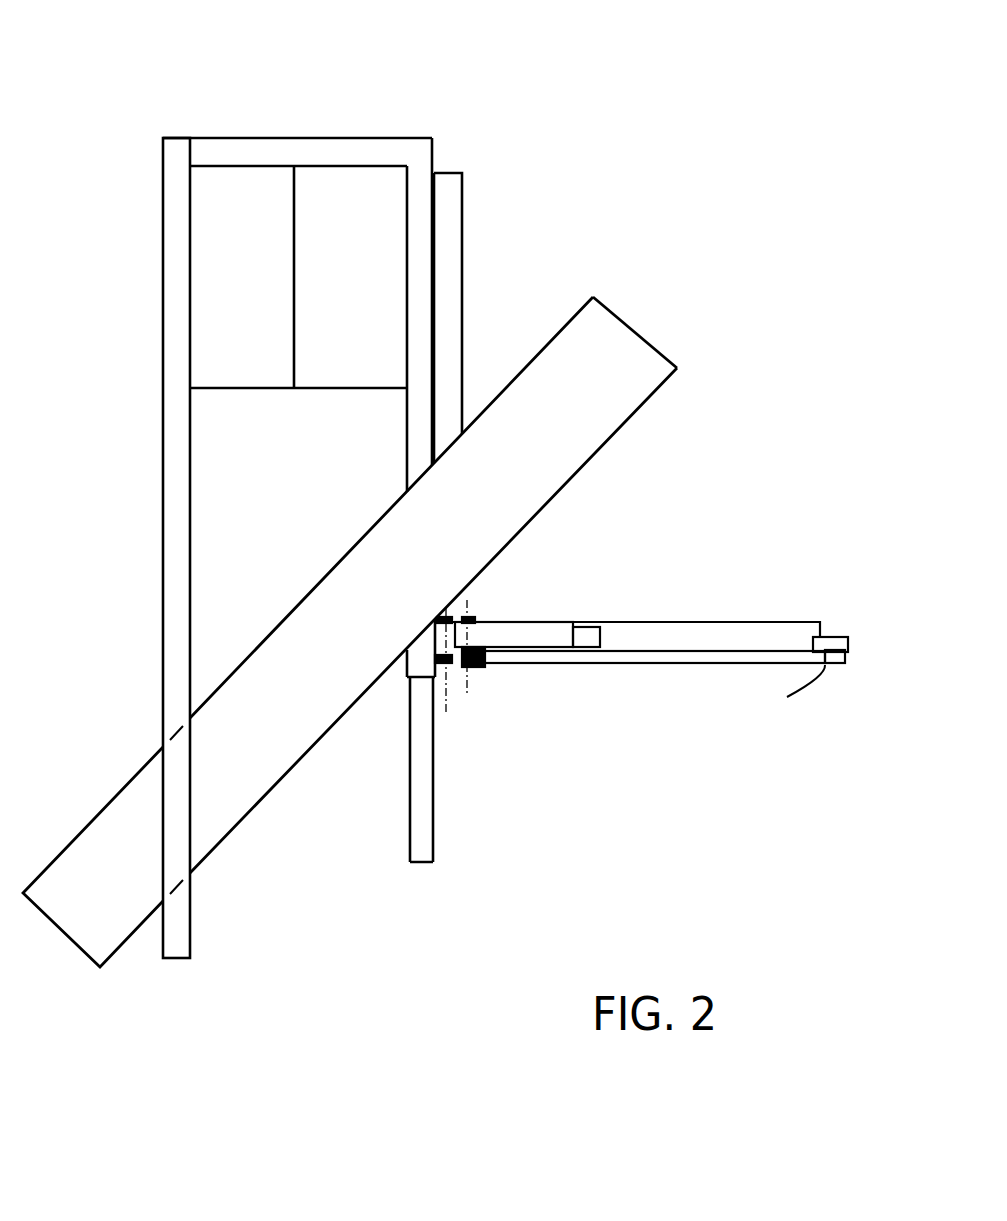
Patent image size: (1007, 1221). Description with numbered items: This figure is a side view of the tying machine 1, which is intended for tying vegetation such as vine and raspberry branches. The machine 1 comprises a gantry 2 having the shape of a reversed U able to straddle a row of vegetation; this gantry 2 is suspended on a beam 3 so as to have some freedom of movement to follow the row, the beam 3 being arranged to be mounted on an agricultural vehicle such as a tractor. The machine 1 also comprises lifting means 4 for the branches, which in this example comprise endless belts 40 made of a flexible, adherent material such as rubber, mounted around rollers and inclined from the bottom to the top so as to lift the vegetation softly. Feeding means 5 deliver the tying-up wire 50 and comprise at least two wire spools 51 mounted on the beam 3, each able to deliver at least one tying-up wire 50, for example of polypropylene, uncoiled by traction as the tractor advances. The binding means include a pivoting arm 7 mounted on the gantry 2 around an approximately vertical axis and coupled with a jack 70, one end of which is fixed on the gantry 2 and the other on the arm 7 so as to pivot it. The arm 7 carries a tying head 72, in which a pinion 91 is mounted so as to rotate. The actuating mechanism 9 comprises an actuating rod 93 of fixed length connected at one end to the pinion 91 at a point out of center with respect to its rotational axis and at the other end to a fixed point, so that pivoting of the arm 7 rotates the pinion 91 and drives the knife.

The tying machine 1 is at (613, 148).
The gantry 2 is at (445, 280).
The beam 3 is at (165, 223).
The lifting means 4 is at (645, 290).
The feeding means 5 is at (225, 85).
The pivoting arm 7 is at (680, 628).
The actuating mechanism 9 is at (607, 678).
The endless belt 40 is at (620, 360).
The tying-up wire 50 is at (340, 167).
The wire spool 51 is at (245, 294).
The jack 70 is at (528, 623).
The tying head 72 is at (840, 637).
The pinion 91 is at (845, 657).
The actuating rod 93 is at (695, 662).